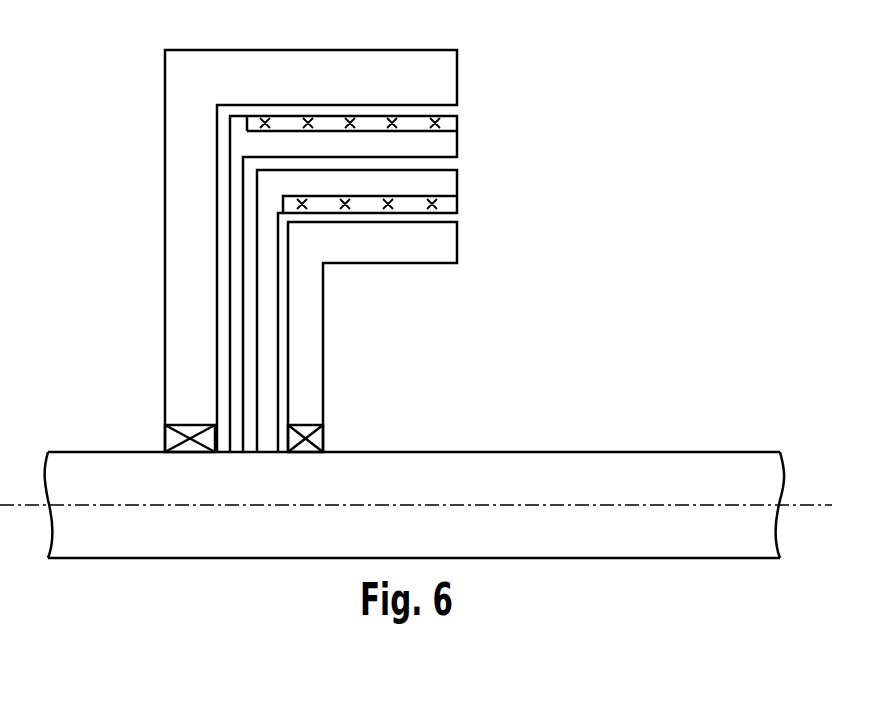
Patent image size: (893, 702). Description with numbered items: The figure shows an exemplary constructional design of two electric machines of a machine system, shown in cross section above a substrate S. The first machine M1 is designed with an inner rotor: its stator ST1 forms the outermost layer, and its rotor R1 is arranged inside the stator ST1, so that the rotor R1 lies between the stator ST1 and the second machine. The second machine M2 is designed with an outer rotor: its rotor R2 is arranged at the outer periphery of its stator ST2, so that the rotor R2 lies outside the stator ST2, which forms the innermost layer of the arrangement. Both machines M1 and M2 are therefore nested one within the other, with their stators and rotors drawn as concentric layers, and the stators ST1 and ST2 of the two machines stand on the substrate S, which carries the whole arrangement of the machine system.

The substrate S is at (632, 452).
The stator ST1 is at (448, 67).
The rotor R1 is at (385, 284).
The machine M1 is at (388, 251).
The rotor R2 is at (448, 183).
The stator ST2 is at (420, 257).
The machine M2 is at (434, 307).